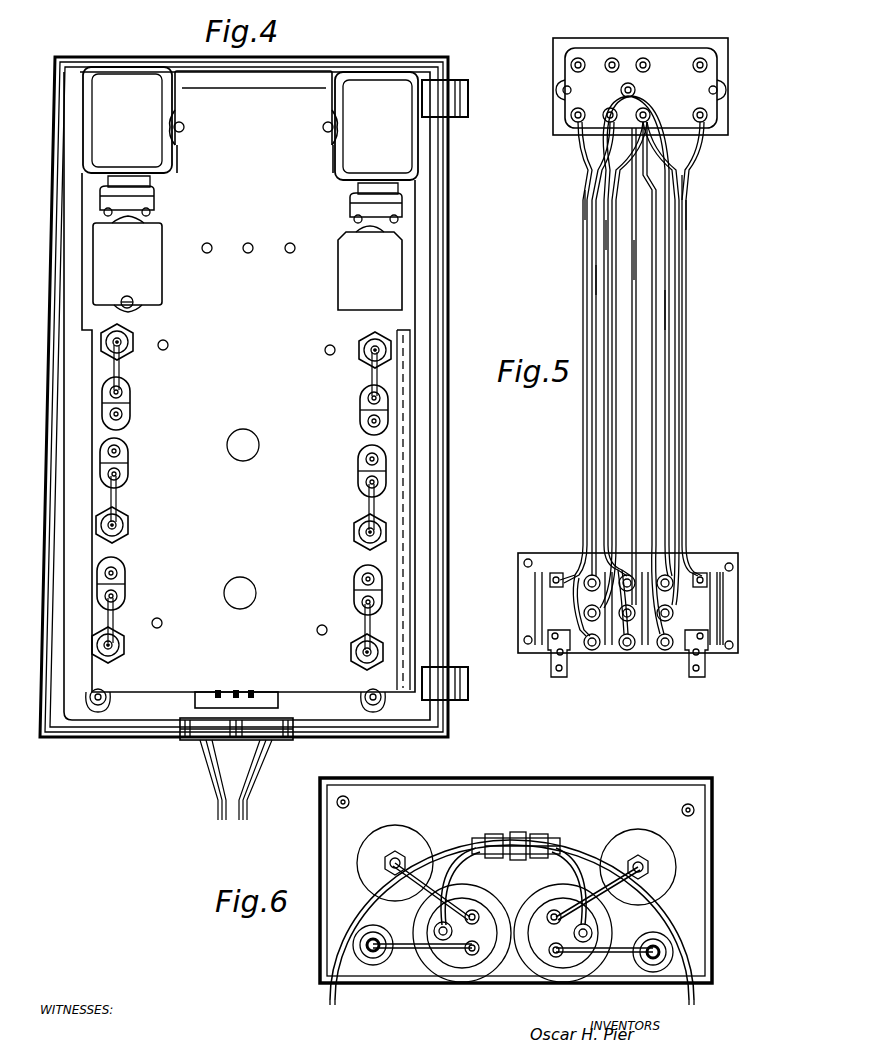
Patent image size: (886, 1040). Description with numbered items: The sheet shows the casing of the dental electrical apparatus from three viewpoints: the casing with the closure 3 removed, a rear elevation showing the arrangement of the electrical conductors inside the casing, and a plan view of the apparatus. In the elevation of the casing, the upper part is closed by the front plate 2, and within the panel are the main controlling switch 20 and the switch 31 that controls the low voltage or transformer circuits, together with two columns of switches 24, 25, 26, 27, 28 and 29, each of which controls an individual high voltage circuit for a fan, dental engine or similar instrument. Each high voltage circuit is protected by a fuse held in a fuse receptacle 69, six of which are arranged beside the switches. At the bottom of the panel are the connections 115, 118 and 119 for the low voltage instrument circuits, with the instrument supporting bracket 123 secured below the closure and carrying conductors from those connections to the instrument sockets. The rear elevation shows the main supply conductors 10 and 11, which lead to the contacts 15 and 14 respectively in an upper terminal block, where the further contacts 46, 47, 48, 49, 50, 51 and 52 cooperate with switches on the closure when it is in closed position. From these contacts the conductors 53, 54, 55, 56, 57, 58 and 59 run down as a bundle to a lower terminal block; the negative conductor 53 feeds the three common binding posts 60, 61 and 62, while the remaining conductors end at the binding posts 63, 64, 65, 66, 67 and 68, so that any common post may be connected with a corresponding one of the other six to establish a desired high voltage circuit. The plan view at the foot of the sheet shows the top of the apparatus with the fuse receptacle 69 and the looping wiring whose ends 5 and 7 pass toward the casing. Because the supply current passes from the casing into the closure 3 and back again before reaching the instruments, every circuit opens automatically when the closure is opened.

In FIG. 6, the front plate 2 is at (516, 889).
In FIG. 4, the movable closure 3 is at (70, 368).
In FIG. 6, the wire end 5 is at (335, 995).
In FIG. 6, the wire end 7 is at (690, 997).
In FIG. 5, the electrical conductor 10 is at (688, 473).
In FIG. 5, the electrical conductor 11 is at (580, 485).
In FIG. 5, the contact 14 is at (645, 60).
In FIG. 5, the contact 15 is at (706, 63).
In FIG. 4, the main controlling switch 20 is at (370, 268).
In FIG. 4, the switch 24 is at (130, 400).
In FIG. 4, the switch 25 is at (128, 460).
In FIG. 4, the switch 26 is at (125, 580).
In FIG. 4, the switch 27 is at (355, 591).
In FIG. 4, the switch 28 is at (360, 470).
In FIG. 4, the switch 29 is at (362, 412).
In FIG. 4, the switch 31 is at (127, 264).
In FIG. 5, the contact 46 is at (706, 115).
In FIG. 5, the contact 47 is at (644, 122).
In FIG. 5, the contact 48 is at (634, 88).
In FIG. 5, the contact 49 is at (613, 60).
In FIG. 5, the contact 50 is at (605, 120).
In FIG. 5, the contact 51 is at (572, 62).
In FIG. 5, the contact 52 is at (572, 120).
In FIG. 5, the conductor 53 is at (637, 266).
In FIG. 5, the conductor 54 is at (676, 186).
In FIG. 5, the conductor 55 is at (684, 216).
In FIG. 5, the conductor 56 is at (667, 316).
In FIG. 5, the conductor 57 is at (595, 206).
In FIG. 5, the conductor 58 is at (608, 236).
In FIG. 5, the conductor 59 is at (600, 280).
In FIG. 5, the common binding post 60 is at (627, 578).
In FIG. 5, the common binding post 61 is at (626, 650).
In FIG. 5, the common binding post 62 is at (632, 648).
In FIG. 5, the binding post 63 is at (670, 580).
In FIG. 5, the binding post 64 is at (673, 613).
In FIG. 5, the binding post 65 is at (668, 650).
In FIG. 5, the binding post 66 is at (590, 649).
In FIG. 5, the binding post 67 is at (594, 650).
In FIG. 5, the binding post 68 is at (589, 578).
In FIG. 4, the fuse receptacle 69 is at (132, 345).
In FIG. 4, the connection 115 is at (219, 690).
In FIG. 4, the connection 118 is at (252, 690).
In FIG. 4, the connection 119 is at (237, 690).
In FIG. 4, the instrument supporting bracket 123 is at (230, 768).